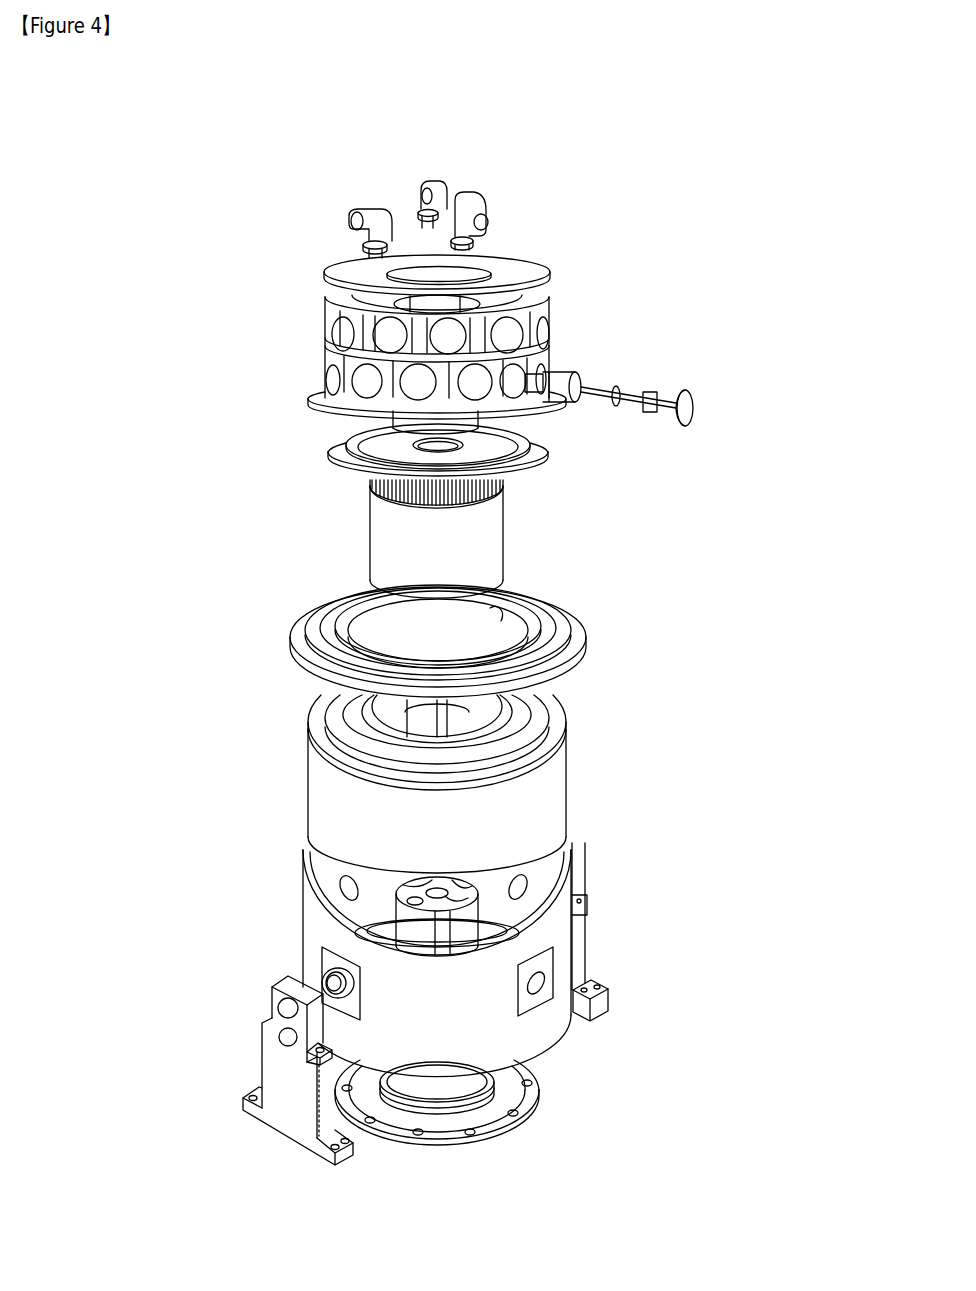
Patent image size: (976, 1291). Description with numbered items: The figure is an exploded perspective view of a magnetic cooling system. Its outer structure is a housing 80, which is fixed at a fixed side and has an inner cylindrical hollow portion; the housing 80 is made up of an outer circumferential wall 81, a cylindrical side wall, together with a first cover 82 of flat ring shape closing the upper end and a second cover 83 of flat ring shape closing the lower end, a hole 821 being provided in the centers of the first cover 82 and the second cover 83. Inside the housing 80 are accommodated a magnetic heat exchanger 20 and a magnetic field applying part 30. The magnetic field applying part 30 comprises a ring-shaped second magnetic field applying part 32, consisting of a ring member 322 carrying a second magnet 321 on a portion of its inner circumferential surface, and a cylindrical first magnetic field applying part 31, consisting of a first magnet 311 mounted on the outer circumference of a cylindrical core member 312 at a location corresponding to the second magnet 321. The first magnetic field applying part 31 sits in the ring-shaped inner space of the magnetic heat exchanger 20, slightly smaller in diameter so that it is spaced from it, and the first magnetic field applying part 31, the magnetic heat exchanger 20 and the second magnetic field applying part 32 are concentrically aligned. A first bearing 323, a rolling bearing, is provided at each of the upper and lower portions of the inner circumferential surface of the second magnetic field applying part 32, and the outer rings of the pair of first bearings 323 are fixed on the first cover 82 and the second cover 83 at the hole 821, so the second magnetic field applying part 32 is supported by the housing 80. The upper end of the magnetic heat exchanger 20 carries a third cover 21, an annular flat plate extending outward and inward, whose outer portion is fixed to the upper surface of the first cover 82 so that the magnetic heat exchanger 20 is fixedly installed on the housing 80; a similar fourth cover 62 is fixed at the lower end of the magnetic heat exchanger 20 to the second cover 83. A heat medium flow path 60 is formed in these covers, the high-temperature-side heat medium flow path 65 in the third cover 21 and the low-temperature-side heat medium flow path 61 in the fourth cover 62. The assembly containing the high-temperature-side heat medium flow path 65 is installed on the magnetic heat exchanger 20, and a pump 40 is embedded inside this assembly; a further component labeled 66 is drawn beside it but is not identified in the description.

The magnetic heat exchanger 20 is at (490, 537).
The third cover 21 is at (535, 452).
The magnetic field applying part 30 is at (144, 733).
The first magnetic field applying part 31 is at (194, 870).
The first magnet 311 is at (520, 927).
The core member 312 is at (405, 917).
The second magnetic field applying part 32 is at (194, 693).
The second magnet 321 is at (420, 715).
The ring member 322 is at (327, 793).
The first bearing 323 is at (520, 710).
The pump 40 is at (442, 248).
The heat medium flow path 60 is at (503, 725).
The low-temperature-side heat medium flow path 61 is at (530, 1123).
The fourth cover 62 is at (477, 1118).
The high-temperature-side heat medium flow path 65 is at (555, 293).
The fastening rod 66 is at (530, 355).
The housing 80 is at (718, 1029).
The outer circumferential wall 81 is at (530, 943).
The first cover 82 is at (585, 640).
The hole 821 is at (523, 622).
The second cover 83 is at (547, 1055).